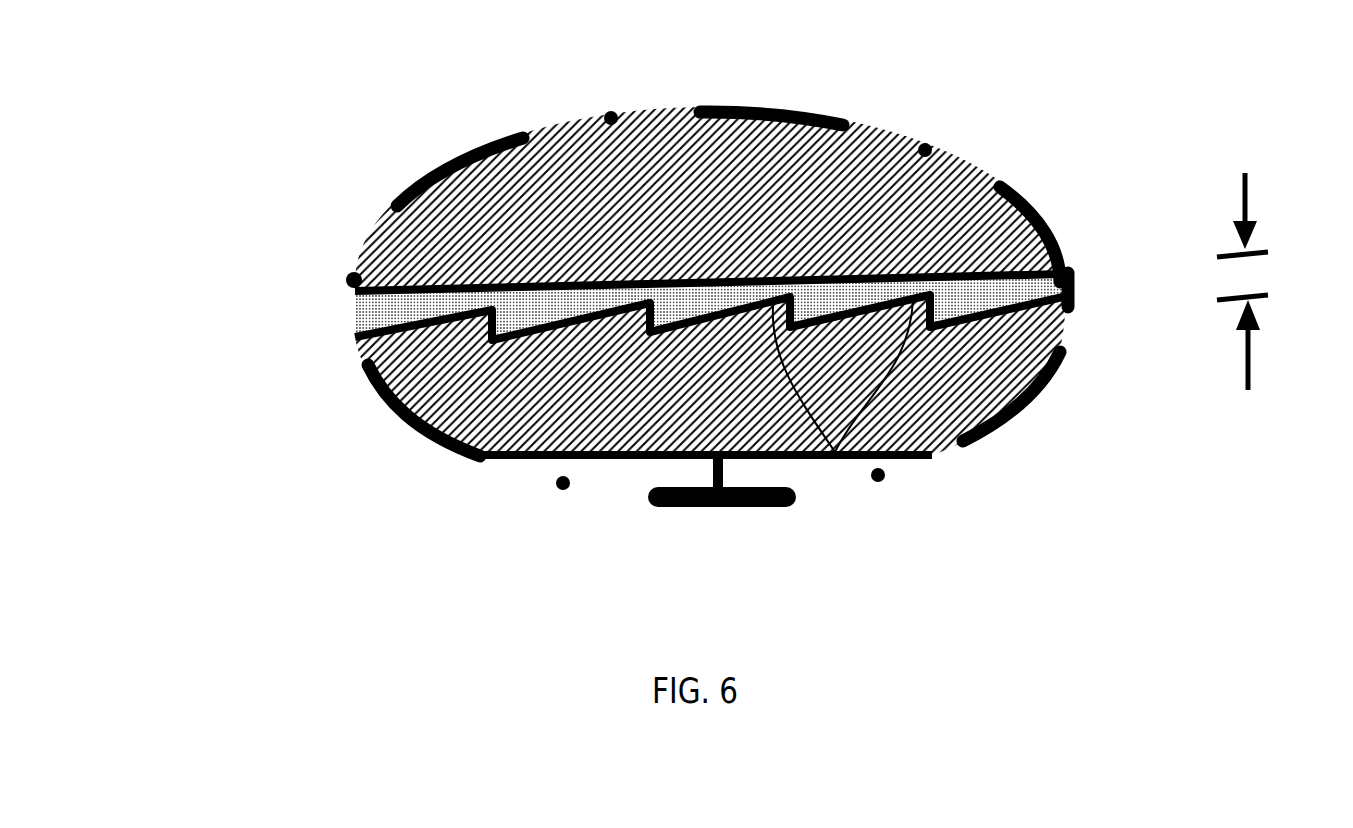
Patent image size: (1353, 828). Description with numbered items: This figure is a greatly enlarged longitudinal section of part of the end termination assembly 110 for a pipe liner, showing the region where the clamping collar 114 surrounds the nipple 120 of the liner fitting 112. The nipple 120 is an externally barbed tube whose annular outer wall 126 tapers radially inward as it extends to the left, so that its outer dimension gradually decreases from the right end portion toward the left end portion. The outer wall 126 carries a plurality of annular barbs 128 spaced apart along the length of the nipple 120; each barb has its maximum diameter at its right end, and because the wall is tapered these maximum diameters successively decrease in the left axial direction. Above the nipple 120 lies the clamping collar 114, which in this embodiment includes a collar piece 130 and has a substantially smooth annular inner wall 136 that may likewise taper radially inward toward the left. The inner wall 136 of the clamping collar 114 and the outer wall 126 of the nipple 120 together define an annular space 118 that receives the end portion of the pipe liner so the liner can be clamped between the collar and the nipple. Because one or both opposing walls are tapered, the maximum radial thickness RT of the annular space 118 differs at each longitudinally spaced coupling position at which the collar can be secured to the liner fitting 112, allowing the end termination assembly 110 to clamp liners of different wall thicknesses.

The end termination assembly 110 is at (188, 481).
The liner fitting 112 is at (506, 490).
The clamping collar 114 is at (422, 135).
The annular space 118 is at (519, 303).
The nipple 120 is at (420, 441).
The annular outer wall 126 is at (1077, 297).
The annular barbs 128 is at (835, 452).
The collar piece 130 is at (385, 228).
The annular inner wall 136 is at (1072, 268).
The maximum radial thickness RT is at (1243, 200).